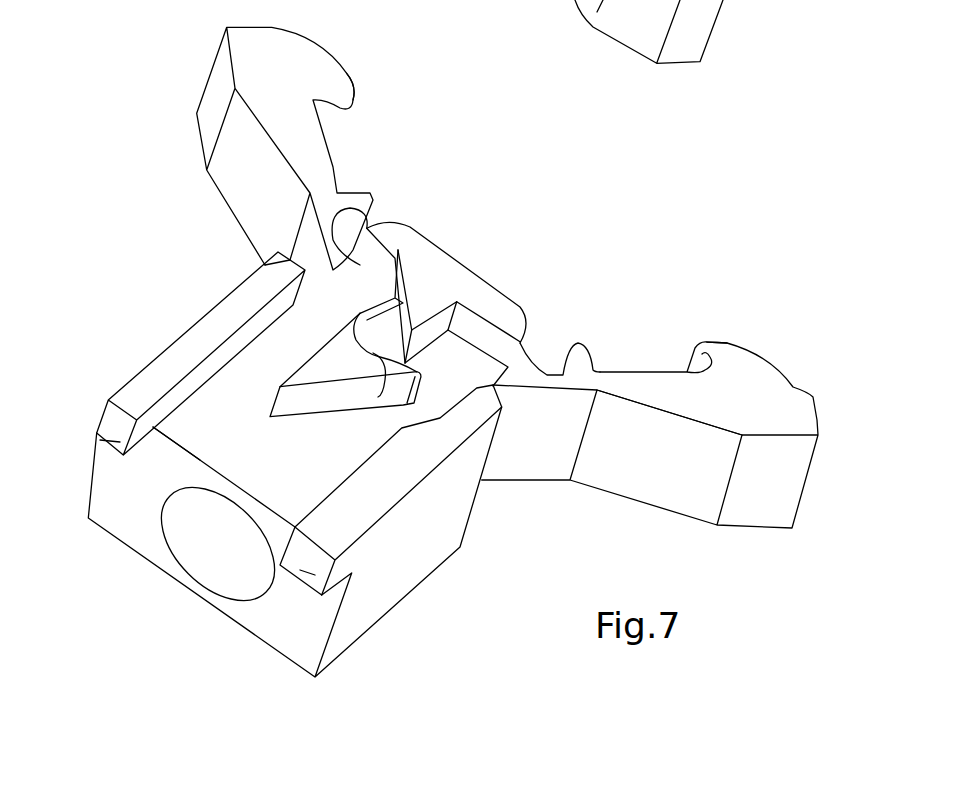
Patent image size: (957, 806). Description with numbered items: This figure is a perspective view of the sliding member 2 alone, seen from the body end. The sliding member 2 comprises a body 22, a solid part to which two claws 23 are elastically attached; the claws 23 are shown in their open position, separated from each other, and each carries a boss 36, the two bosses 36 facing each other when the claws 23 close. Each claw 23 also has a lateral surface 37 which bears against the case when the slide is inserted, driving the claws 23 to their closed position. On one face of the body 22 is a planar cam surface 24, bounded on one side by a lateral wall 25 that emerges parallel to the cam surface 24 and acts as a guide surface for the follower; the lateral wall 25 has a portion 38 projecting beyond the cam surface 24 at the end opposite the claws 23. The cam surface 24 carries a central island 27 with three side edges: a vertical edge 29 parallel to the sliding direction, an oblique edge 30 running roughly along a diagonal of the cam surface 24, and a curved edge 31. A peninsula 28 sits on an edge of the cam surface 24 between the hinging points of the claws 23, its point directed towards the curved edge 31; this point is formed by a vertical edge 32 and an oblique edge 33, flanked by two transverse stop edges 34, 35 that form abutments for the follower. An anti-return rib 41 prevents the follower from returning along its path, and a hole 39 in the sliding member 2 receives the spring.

The sliding member 2 is at (193, 308).
The body 22 is at (395, 580).
The claws 23 is at (244, 68).
The cam surface 24 is at (200, 430).
The lateral wall 25 is at (140, 380).
The central island 27 is at (335, 353).
The peninsula 28 is at (477, 288).
The vertical edge 29 is at (293, 370).
The oblique edge 30 is at (330, 403).
The curved edge 31 is at (378, 397).
The vertical edge 32 is at (432, 333).
The oblique edge 33 is at (403, 327).
The stop edge 34 is at (520, 342).
The stop edge 35 is at (377, 252).
The boss 36 is at (343, 88).
The lateral surface 37 is at (303, 243).
The projecting portion 38 is at (107, 443).
The hole 39 is at (198, 572).
The anti-return rib 41 is at (373, 313).